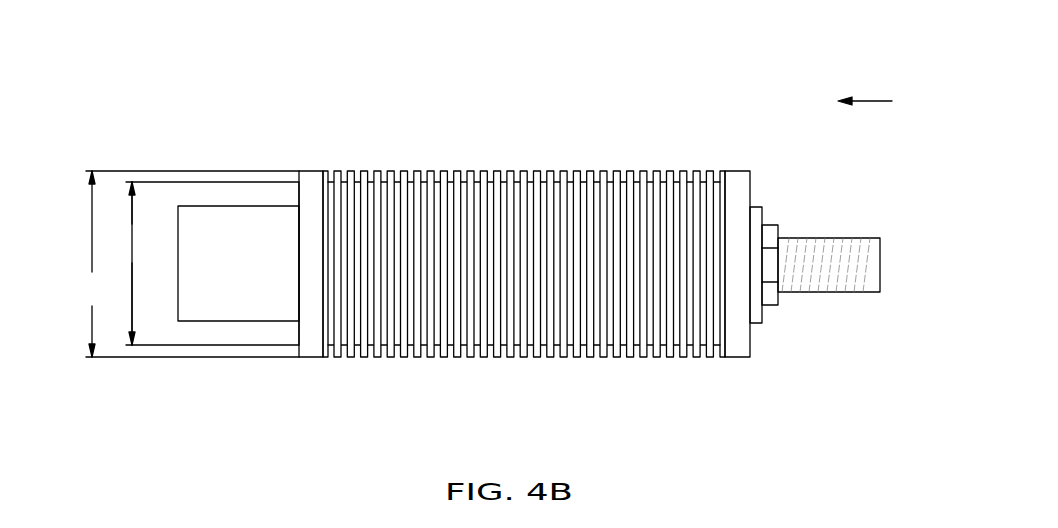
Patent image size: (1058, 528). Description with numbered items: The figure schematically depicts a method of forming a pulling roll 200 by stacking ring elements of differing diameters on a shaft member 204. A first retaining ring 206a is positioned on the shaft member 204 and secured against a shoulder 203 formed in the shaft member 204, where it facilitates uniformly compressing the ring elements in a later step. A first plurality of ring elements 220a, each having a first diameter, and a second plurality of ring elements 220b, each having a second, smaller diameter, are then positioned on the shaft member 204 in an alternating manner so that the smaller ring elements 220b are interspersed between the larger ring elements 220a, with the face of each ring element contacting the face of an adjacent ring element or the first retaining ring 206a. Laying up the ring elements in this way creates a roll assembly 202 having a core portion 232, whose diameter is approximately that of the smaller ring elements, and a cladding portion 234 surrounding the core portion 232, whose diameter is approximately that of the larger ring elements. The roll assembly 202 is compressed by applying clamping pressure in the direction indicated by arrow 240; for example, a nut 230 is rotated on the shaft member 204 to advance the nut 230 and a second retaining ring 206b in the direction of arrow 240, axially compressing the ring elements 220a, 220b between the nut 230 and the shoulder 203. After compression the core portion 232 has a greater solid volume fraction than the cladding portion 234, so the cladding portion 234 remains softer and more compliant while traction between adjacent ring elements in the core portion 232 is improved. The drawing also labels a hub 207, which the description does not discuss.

The pulling roll 200 is at (511, 218).
The roll assembly 202 is at (560, 249).
The shoulder 203 is at (232, 321).
The shaft member 204 is at (880, 265).
The first retaining ring 206a is at (310, 357).
The second retaining ring 206b is at (750, 176).
The hub 207 is at (762, 317).
The first plurality of ring elements 220a is at (350, 171).
The second plurality of ring elements 220b is at (384, 172).
The nut 230 is at (778, 225).
The core portion 232 is at (132, 263).
The cladding portion 234 is at (183, 264).
The arrow 240 is at (892, 101).